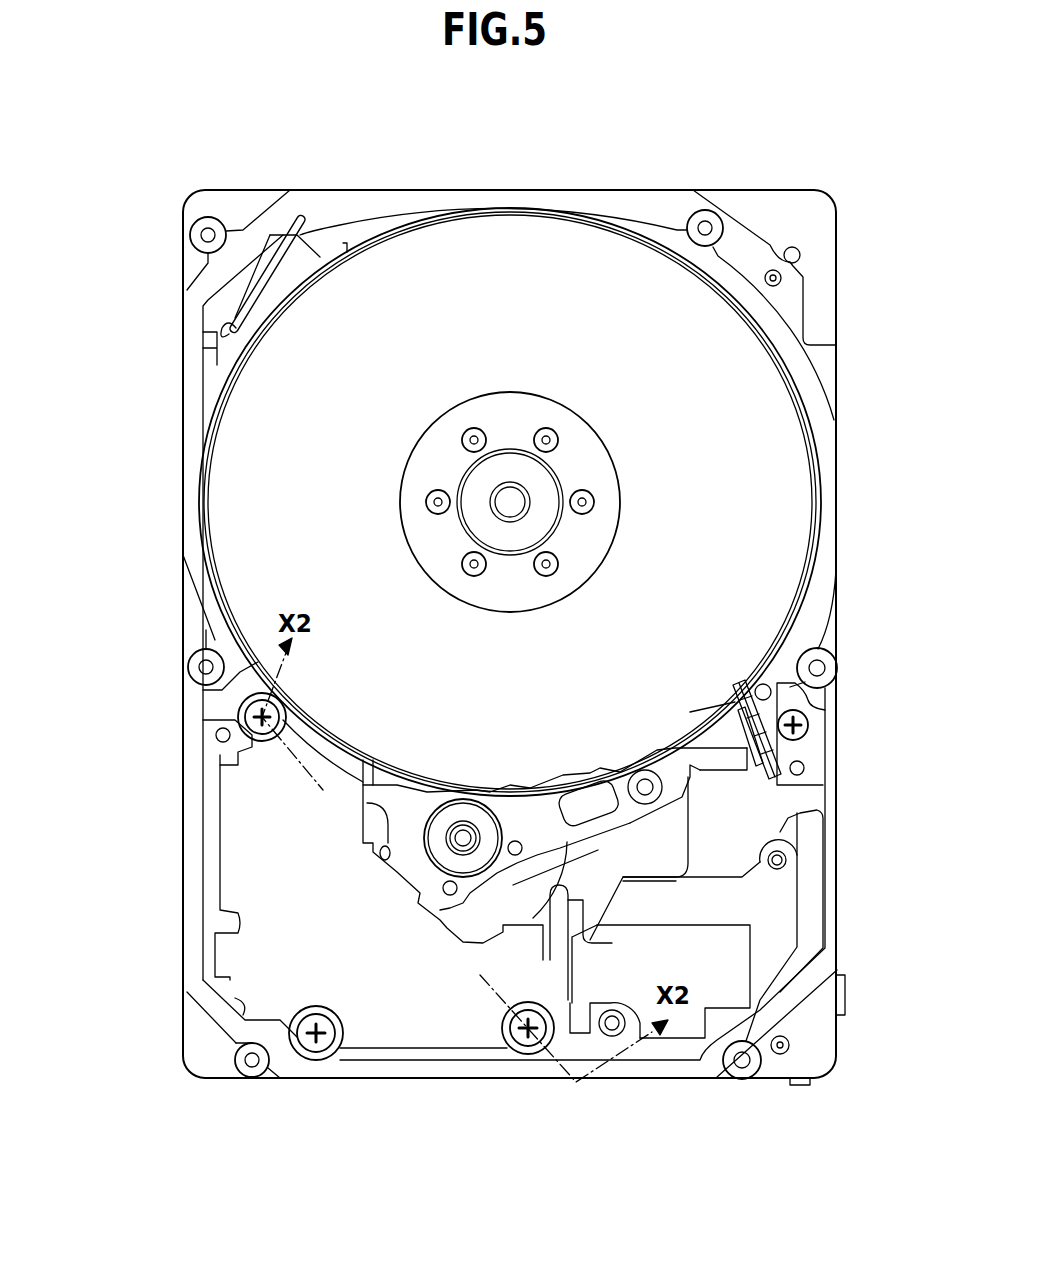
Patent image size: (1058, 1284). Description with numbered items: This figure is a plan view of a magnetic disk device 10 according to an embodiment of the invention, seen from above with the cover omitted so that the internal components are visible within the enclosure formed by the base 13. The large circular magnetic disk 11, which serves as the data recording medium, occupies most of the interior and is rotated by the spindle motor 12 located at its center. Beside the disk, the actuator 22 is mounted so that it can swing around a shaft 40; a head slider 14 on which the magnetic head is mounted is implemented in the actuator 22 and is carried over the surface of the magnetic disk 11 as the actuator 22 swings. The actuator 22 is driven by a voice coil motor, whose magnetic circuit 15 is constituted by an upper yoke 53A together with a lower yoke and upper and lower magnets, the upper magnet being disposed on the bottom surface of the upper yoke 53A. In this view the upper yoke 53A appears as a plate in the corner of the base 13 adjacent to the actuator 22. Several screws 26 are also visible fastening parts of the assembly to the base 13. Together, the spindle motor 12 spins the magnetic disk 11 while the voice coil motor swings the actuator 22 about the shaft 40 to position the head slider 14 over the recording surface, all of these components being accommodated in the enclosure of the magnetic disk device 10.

The magnetic disk device 10 is at (523, 124).
The magnetic disk 11 is at (760, 392).
The spindle motor 12 is at (540, 508).
The base 13 is at (848, 857).
The head slider 14 is at (743, 732).
The magnetic circuit 15 is at (274, 904).
The actuator 22 is at (590, 766).
The screws 26 is at (262, 717).
The shaft 40 is at (463, 838).
The upper yoke 53A is at (273, 963).